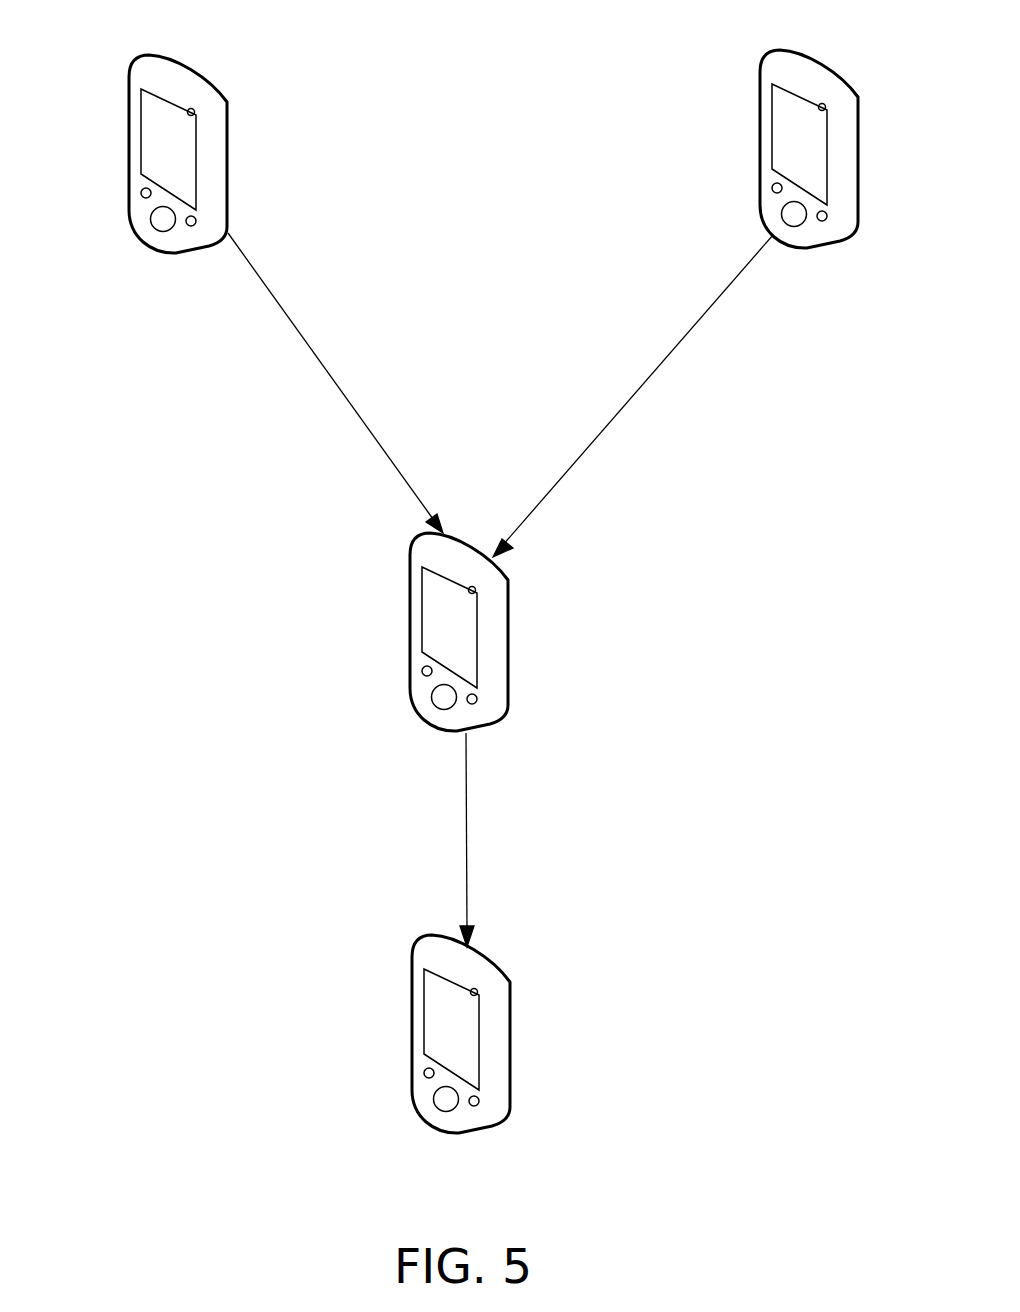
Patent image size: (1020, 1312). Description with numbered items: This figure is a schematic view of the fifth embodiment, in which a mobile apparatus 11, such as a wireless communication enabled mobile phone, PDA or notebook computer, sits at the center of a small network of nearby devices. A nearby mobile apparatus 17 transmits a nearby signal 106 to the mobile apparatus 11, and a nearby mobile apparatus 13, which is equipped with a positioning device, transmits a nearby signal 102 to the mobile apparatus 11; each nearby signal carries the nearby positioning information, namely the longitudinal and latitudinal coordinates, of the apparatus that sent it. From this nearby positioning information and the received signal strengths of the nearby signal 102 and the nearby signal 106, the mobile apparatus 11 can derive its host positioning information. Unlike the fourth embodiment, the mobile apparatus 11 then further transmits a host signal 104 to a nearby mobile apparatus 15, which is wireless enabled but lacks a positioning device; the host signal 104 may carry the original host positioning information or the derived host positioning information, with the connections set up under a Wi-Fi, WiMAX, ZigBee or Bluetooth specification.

The nearby mobile apparatus 17 is at (129, 92).
The nearby mobile apparatus 13 is at (760, 88).
The mobile apparatus 11 is at (410, 572).
The nearby mobile apparatus 15 is at (413, 1025).
The nearby signal 106 is at (335, 363).
The nearby signal 102 is at (637, 397).
The host signal 104 is at (475, 815).